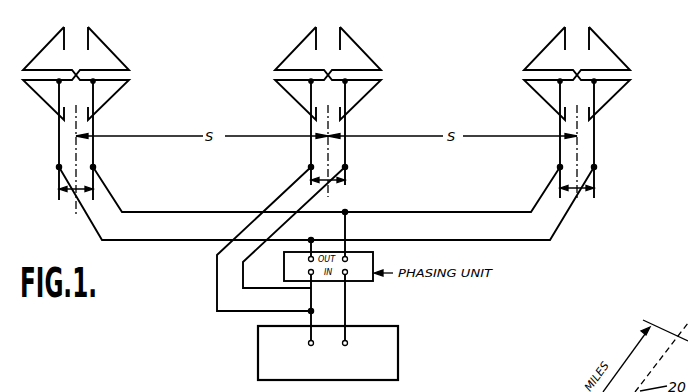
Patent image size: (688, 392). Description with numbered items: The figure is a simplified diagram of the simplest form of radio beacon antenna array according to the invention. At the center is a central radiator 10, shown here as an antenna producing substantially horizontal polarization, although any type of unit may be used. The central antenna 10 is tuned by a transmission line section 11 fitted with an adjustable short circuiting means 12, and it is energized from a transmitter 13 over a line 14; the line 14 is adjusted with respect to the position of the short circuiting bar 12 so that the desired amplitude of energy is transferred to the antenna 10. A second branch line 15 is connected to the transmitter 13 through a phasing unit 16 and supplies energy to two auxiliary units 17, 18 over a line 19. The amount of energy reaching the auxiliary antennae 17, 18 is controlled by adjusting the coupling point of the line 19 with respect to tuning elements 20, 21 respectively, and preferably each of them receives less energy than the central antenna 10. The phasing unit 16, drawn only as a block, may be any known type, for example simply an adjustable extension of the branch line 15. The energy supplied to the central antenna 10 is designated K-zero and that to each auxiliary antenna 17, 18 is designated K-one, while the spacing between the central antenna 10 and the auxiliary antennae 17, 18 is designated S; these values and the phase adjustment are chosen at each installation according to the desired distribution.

The central radiator 10 is at (368, 50).
The transmission line section 11 is at (346, 153).
The adjustable short circuiting means 12 is at (333, 181).
The transmitter 13 is at (399, 335).
The line 14 is at (218, 281).
The second branch line 15 is at (338, 247).
The phasing unit 16 is at (360, 282).
The auxiliary unit 17 is at (110, 50).
The auxiliary unit 18 is at (620, 50).
The line 19 is at (427, 215).
The tuning element 20 is at (94, 154).
The tuning element 21 is at (596, 141).